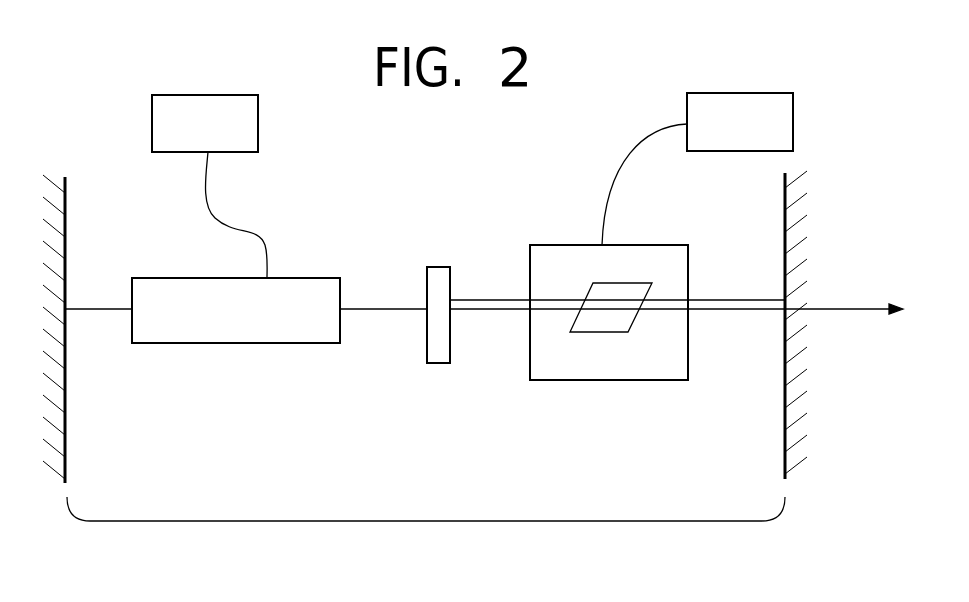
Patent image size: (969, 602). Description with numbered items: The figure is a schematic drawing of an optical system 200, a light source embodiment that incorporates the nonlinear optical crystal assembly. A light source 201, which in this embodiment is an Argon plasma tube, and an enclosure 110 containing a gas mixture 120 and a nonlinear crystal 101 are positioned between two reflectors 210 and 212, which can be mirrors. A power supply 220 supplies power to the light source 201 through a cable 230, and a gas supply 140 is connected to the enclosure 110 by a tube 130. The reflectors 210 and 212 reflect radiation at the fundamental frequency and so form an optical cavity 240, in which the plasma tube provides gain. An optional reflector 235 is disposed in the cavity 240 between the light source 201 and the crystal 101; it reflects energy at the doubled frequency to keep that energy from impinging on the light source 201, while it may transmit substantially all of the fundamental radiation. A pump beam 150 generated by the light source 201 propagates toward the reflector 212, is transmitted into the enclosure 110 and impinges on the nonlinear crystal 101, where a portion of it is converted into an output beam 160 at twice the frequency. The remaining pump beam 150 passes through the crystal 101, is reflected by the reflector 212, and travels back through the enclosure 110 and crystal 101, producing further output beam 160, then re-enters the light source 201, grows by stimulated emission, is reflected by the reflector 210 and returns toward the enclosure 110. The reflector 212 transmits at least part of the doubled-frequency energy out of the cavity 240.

The optical system 200 is at (414, 172).
The light source 201 is at (289, 344).
The reflector 210 is at (65, 389).
The reflector 212 is at (785, 372).
The pump beam 150 is at (108, 312).
The output beam 160 is at (815, 308).
The power supply 220 is at (216, 129).
The cable 230 is at (204, 178).
The reflector 235 is at (450, 277).
The enclosure 110 is at (609, 332).
The gas mixture 120 is at (572, 282).
The nonlinear crystal 101 is at (634, 320).
The gas supply 140 is at (752, 131).
The tube 130 is at (618, 170).
The optical cavity 240 is at (426, 522).